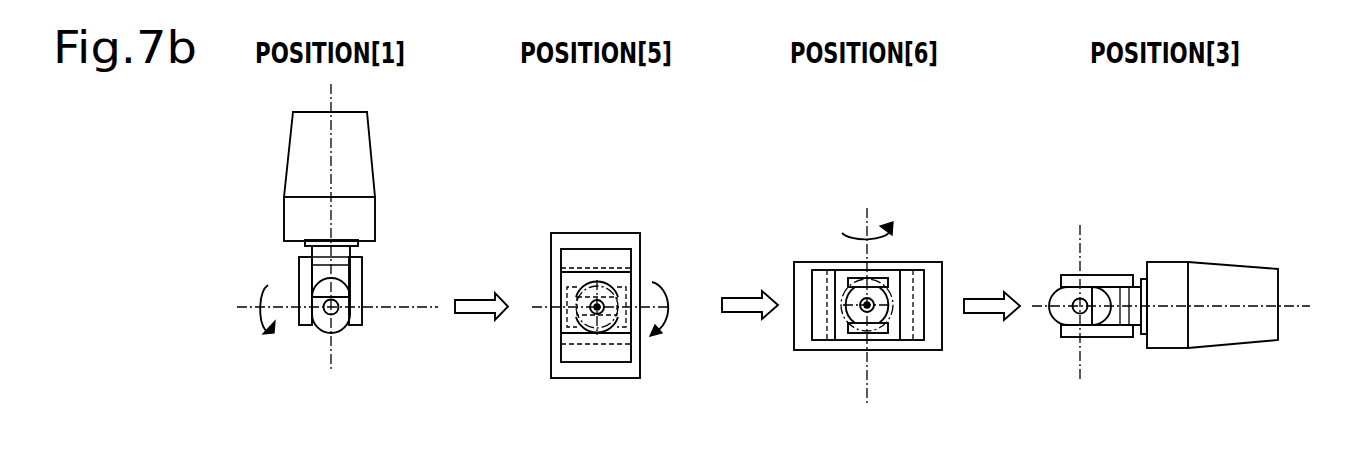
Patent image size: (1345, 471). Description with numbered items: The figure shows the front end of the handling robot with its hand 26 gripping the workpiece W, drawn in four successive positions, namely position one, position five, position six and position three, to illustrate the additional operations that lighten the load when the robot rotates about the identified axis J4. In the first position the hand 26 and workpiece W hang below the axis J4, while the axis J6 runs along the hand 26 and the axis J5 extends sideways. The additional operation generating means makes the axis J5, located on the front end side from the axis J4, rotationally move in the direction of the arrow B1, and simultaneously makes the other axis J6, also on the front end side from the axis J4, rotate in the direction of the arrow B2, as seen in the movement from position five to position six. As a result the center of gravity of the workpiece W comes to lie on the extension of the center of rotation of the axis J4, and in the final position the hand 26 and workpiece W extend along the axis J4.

The hand 26 is at (297, 222).
The workpiece W is at (567, 278).
The axis J4 is at (326, 314).
The axis J5 is at (421, 309).
The axis J6 is at (333, 178).
The arrow B1 is at (247, 330).
The arrow B2 is at (682, 317).